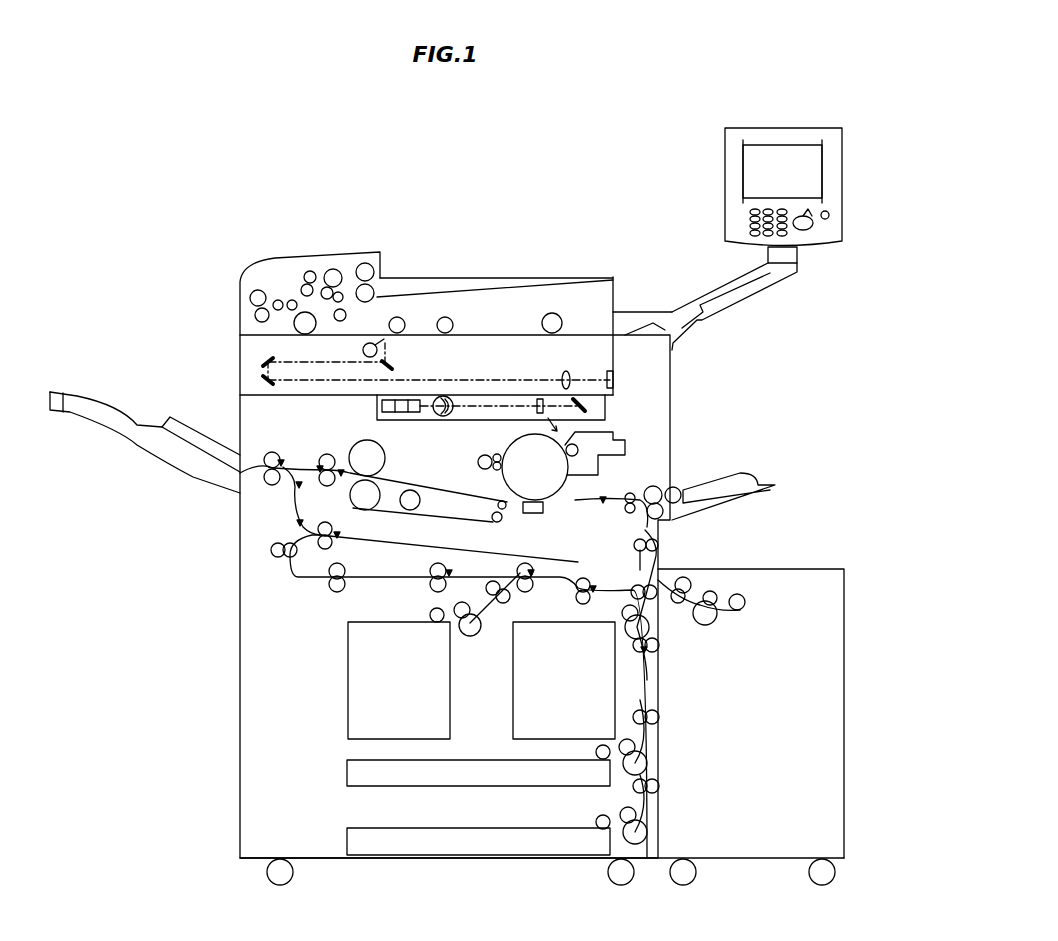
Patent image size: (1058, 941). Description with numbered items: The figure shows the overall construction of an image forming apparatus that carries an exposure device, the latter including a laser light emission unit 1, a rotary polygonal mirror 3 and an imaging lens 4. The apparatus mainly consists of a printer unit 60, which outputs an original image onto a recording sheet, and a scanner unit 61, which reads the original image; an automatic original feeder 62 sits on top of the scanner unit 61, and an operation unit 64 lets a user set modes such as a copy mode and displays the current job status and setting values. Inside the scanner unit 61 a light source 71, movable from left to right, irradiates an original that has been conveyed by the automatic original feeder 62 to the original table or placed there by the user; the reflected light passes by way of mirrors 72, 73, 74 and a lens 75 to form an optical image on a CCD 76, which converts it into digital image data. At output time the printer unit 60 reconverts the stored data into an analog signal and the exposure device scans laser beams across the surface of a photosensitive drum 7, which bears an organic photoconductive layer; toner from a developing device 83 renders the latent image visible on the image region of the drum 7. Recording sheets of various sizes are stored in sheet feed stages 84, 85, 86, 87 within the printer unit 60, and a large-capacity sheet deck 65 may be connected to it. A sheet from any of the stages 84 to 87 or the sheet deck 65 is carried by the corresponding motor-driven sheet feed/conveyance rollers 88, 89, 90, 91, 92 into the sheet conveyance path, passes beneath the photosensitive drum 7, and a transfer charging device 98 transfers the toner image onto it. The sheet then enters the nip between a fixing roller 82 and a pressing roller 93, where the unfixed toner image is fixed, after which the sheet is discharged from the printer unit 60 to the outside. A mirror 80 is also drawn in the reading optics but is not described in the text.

The laser light emission unit 1 is at (461, 400).
The rotary polygonal mirror 3 is at (377, 402).
The imaging lens 4 is at (518, 400).
The photosensitive drum 7 is at (513, 472).
The printer unit 60 is at (252, 843).
The scanner unit 61 is at (585, 348).
The automatic original feeder 62 is at (270, 275).
The operation unit 64 is at (775, 133).
The large-capacity sheet deck 65 is at (738, 843).
The light source 71 is at (367, 343).
The mirror 72 is at (397, 363).
The mirror 73 is at (263, 360).
The mirror 74 is at (263, 380).
The lens 75 is at (572, 373).
The CCD 76 is at (613, 375).
The mirror 80 is at (583, 400).
The fixing roller 82 is at (355, 457).
The developing device 83 is at (610, 450).
The sheet feed stage 84 is at (513, 686).
The sheet feed stage 85 is at (348, 686).
The sheet feed stage 86 is at (347, 767).
The sheet feed stage 87 is at (366, 845).
The sheet feed/conveyance roller 88 is at (460, 604).
The sheet feed/conveyance roller 89 is at (648, 628).
The sheet feed/conveyance roller 90 is at (647, 763).
The sheet feed/conveyance roller 91 is at (647, 832).
The sheet feed/conveyance roller 92 is at (708, 615).
The pressing roller 93 is at (363, 497).
The transfer charging device 98 is at (533, 515).